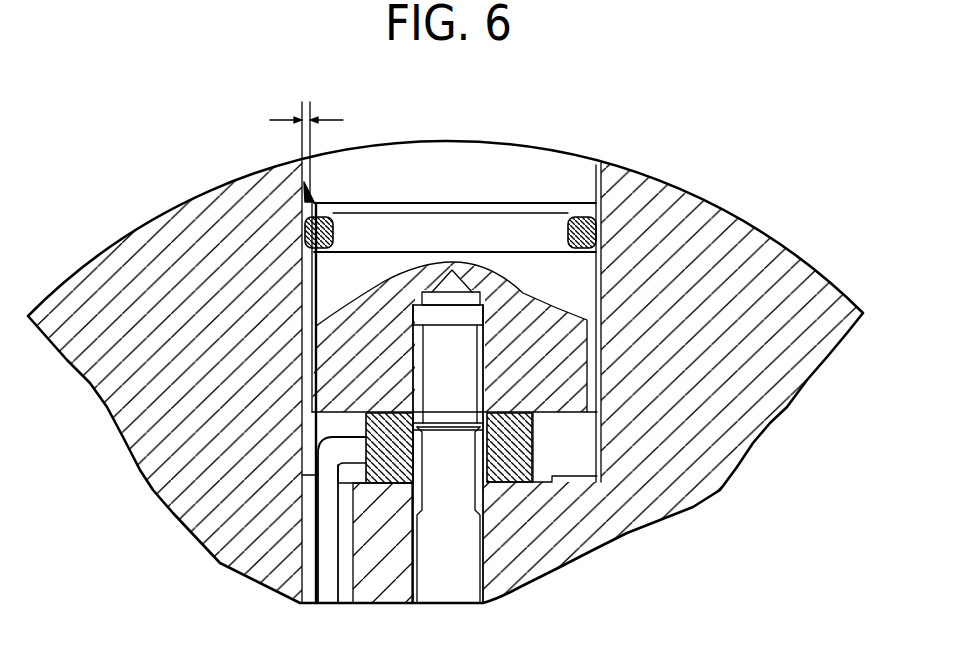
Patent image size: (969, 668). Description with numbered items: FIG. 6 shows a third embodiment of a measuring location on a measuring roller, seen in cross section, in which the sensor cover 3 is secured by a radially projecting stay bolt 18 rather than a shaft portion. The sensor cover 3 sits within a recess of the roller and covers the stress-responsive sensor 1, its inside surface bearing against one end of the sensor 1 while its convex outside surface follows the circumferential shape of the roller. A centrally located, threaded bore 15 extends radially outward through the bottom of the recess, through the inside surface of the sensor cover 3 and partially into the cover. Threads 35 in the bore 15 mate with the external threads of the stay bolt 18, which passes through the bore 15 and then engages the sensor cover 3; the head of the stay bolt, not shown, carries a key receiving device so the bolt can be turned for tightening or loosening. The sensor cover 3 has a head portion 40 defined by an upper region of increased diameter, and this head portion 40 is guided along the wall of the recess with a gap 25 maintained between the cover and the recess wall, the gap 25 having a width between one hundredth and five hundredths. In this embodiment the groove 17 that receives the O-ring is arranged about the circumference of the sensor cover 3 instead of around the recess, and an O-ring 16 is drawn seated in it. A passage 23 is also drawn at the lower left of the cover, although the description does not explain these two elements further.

The stress-responsive sensor 1 is at (517, 460).
The sensor cover 3 is at (523, 303).
The threaded bore 15 is at (487, 542).
The sealing ring 16 is at (603, 223).
The groove 17 is at (303, 187).
The stay bolt 18 is at (458, 363).
The channel 23 is at (327, 567).
The gap 25 is at (308, 107).
The threads 35 is at (480, 385).
The head portion 40 is at (420, 167).